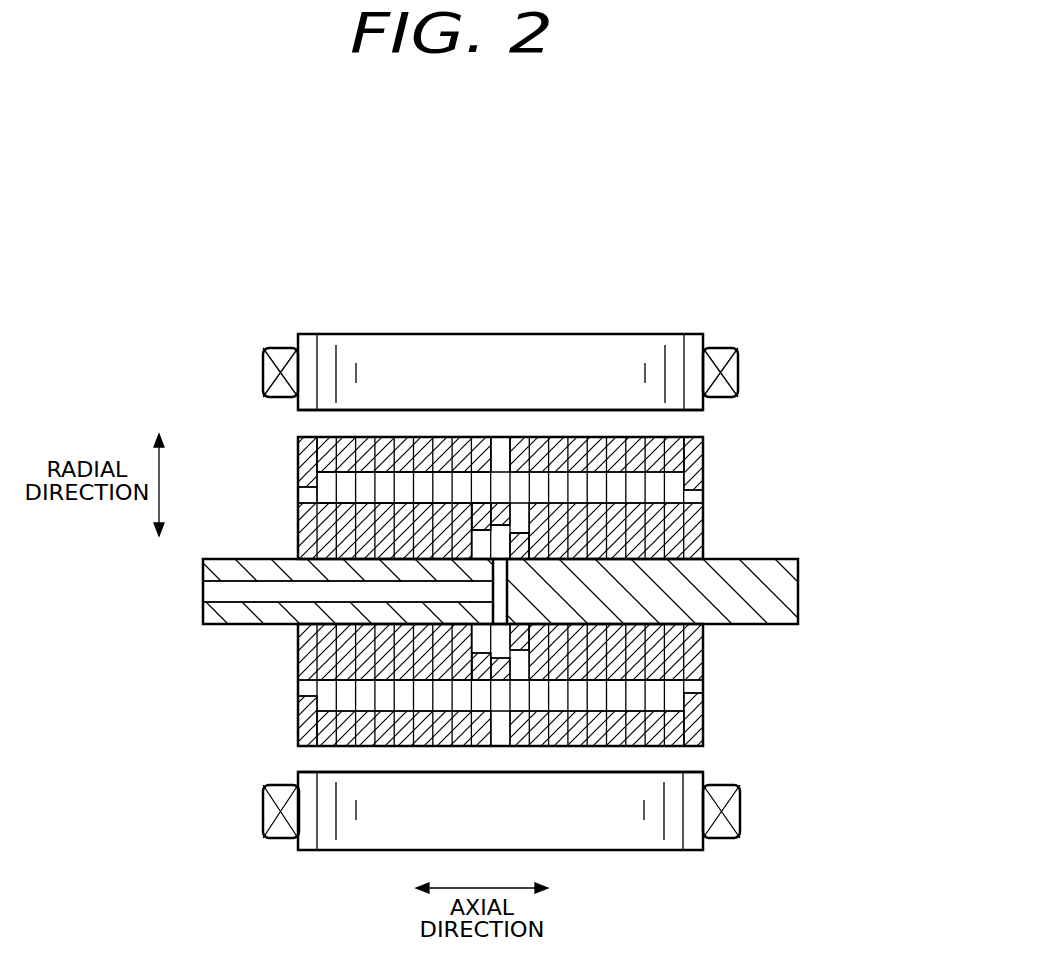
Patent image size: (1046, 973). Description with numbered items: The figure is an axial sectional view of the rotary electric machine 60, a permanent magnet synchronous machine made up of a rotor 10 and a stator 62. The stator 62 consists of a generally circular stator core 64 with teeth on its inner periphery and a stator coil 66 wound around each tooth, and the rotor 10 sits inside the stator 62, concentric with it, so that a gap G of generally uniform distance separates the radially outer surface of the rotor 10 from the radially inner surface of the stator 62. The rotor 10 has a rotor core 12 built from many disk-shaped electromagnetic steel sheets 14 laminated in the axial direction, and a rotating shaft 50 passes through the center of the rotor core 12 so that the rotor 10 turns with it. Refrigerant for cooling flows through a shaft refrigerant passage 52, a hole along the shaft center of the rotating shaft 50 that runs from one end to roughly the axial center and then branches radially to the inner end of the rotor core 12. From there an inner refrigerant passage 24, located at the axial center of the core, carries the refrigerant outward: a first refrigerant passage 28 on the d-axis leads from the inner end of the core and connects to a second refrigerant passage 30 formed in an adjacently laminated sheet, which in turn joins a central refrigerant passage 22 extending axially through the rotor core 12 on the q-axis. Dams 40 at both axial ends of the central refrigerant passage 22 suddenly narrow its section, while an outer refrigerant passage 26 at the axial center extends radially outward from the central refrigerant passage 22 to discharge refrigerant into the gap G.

The rotary electric machine 60 is at (235, 283).
The stator 62 is at (660, 313).
The stator core 64 is at (537, 347).
The stator coil 66 is at (730, 350).
The gap G is at (688, 424).
The rotor 10 is at (268, 470).
The rotor core 12 is at (695, 458).
The electromagnetic steel sheet 14 is at (347, 746).
The central refrigerant passage 22 is at (440, 490).
The outer refrigerant passage 26 is at (500, 465).
The dam 40 is at (305, 487).
The inner refrigerant passage 24 is at (671, 513).
The first refrigerant passage 28 is at (527, 545).
The second refrigerant passage 30 is at (532, 520).
The rotating shaft 50 is at (582, 595).
The shaft refrigerant passage 52 is at (210, 593).